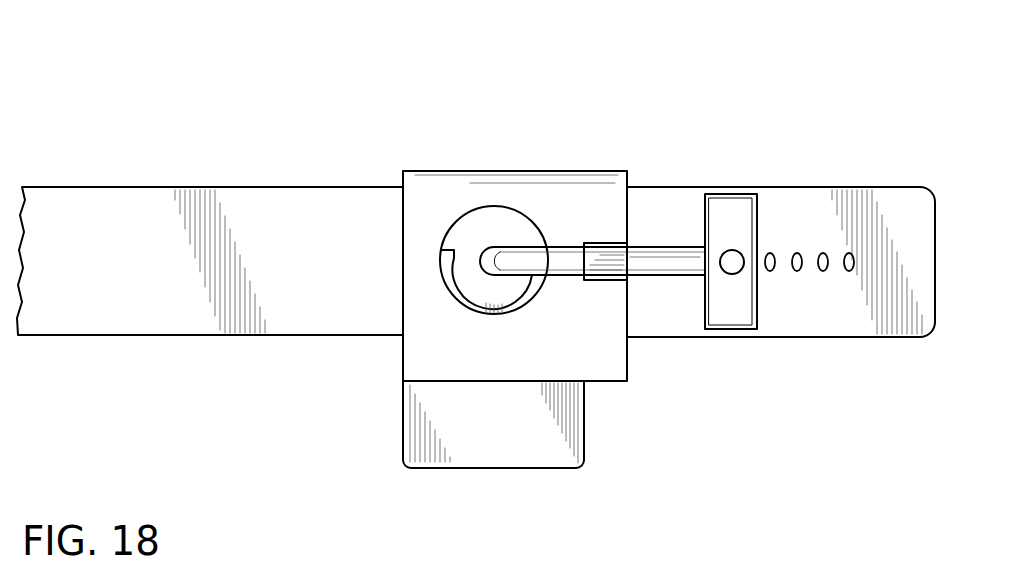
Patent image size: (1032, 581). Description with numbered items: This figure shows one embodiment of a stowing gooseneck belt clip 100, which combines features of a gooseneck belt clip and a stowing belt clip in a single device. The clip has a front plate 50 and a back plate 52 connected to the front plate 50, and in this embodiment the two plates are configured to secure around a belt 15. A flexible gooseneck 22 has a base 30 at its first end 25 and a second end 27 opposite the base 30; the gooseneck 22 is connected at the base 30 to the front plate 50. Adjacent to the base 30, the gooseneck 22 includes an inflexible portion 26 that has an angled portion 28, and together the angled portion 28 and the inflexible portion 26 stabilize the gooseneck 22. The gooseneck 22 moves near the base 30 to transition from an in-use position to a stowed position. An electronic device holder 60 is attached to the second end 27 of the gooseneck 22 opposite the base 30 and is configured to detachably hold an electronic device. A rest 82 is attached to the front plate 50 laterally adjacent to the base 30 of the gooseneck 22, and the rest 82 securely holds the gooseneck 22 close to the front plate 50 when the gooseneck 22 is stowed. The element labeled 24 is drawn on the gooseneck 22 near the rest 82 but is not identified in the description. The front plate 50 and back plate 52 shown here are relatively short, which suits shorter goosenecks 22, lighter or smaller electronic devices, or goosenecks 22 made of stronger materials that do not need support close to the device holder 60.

The stowing gooseneck belt clip 100 is at (690, 88).
The belt 15 is at (802, 187).
The front plate 50 is at (562, 360).
The back plate 52 is at (580, 447).
The base 30 is at (470, 213).
The inflexible portion 26 is at (463, 293).
The flexible gooseneck 22 is at (553, 250).
The angled portion 28 is at (500, 252).
The first end 25 is at (500, 275).
The second end 27 is at (647, 257).
The rest 82 is at (622, 265).
The shaft end 24 is at (667, 275).
The electronic device holder 60 is at (735, 322).